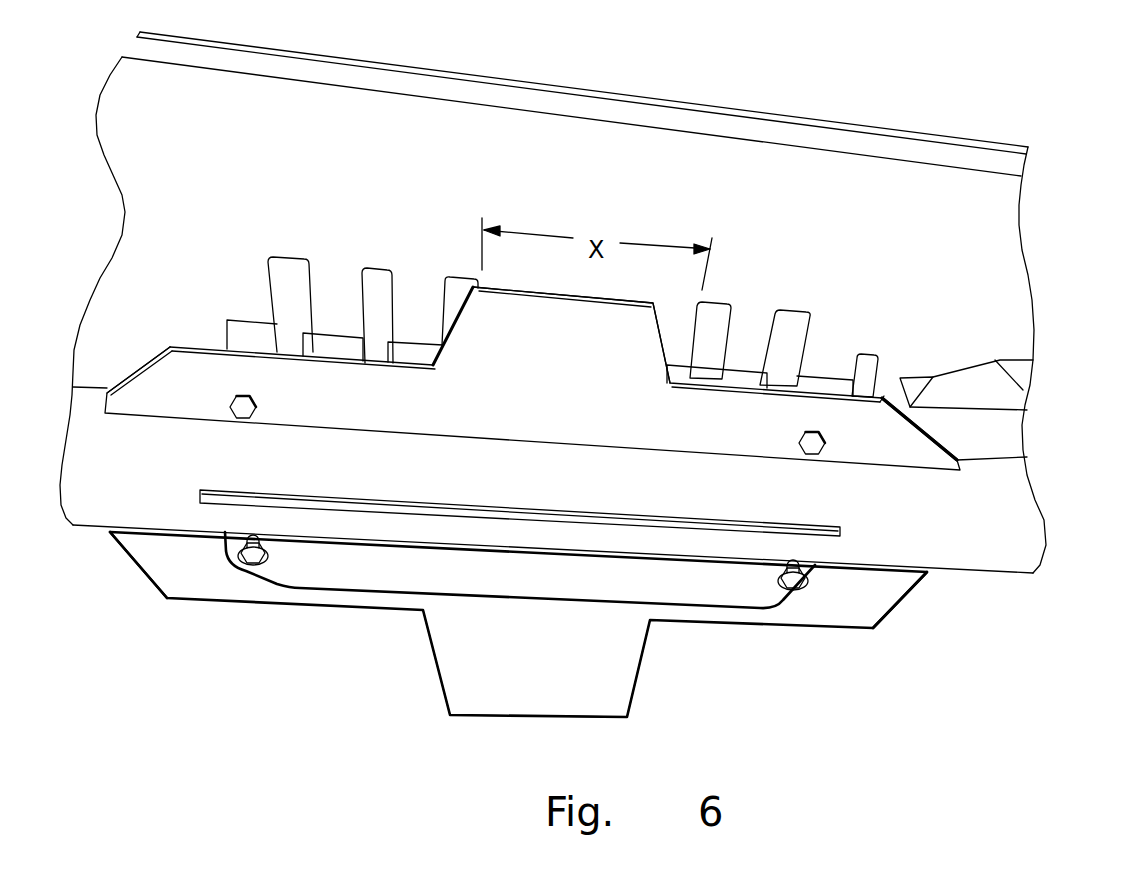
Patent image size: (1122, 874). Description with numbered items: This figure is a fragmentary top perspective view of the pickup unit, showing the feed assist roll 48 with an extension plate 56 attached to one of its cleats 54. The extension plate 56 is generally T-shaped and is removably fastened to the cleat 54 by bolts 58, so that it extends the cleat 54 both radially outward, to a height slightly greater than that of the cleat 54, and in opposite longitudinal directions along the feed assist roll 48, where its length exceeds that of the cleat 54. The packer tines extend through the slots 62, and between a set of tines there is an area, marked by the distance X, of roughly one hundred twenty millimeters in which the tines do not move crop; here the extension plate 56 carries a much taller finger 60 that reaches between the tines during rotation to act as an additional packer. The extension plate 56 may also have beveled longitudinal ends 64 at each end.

The feed assist roll 48 is at (972, 556).
The cleat 54 is at (707, 587).
The extension plate 56 is at (194, 347).
The bolt 58 is at (240, 415).
The finger 60 is at (580, 341).
The slot 62 is at (462, 277).
The beveled longitudinal end 64 is at (143, 366).